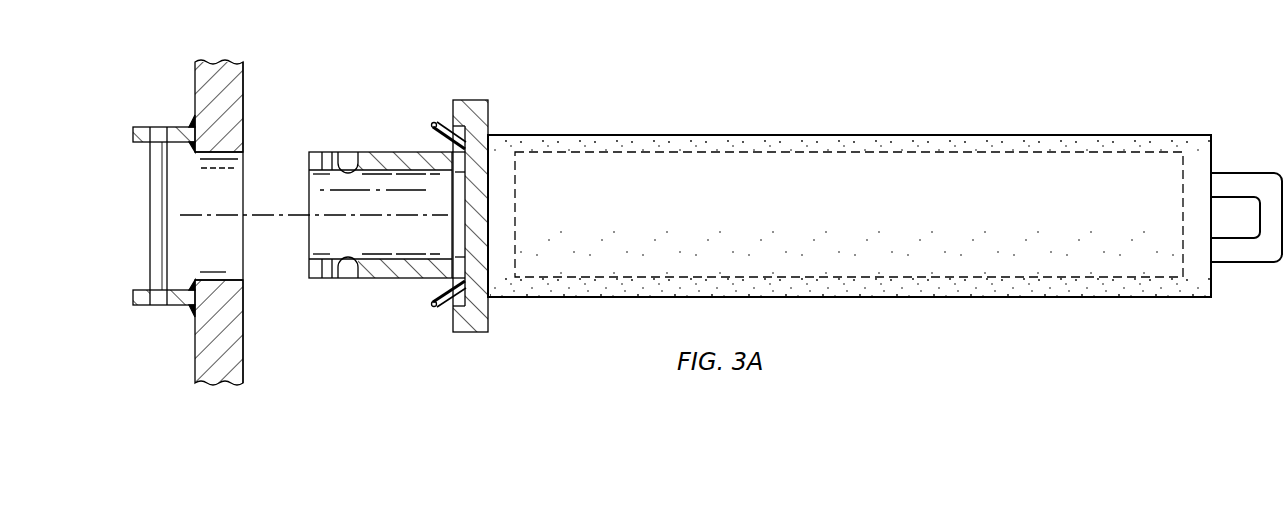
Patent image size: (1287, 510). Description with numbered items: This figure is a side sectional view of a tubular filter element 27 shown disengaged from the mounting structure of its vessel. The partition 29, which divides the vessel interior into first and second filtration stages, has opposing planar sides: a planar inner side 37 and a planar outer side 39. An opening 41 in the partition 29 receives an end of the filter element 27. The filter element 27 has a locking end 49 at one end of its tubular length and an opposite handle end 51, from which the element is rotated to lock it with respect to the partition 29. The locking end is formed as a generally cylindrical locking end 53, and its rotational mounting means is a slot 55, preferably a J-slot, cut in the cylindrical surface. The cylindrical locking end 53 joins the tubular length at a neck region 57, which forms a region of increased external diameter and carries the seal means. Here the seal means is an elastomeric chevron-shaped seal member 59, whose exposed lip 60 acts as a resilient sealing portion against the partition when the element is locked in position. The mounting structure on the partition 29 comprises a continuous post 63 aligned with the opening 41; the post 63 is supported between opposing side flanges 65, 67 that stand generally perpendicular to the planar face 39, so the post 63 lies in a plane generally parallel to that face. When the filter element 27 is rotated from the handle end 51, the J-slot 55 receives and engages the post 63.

The tubular filter element 27 is at (1022, 121).
The partition 29 is at (205, 62).
The planar inner side 37 is at (243, 366).
The planar outer side 39 is at (195, 345).
The opening 41 is at (233, 271).
The locking end 49 is at (311, 138).
The handle end 51 is at (1248, 158).
The cylindrical locking end 53 is at (382, 280).
The slot 55 is at (349, 154).
The neck region 57 is at (454, 108).
The chevron-shaped seal member 59 is at (462, 124).
The exposed lip 60 is at (437, 143).
The post 63 is at (149, 233).
The side flange 65 is at (133, 132).
The side flange 67 is at (133, 300).